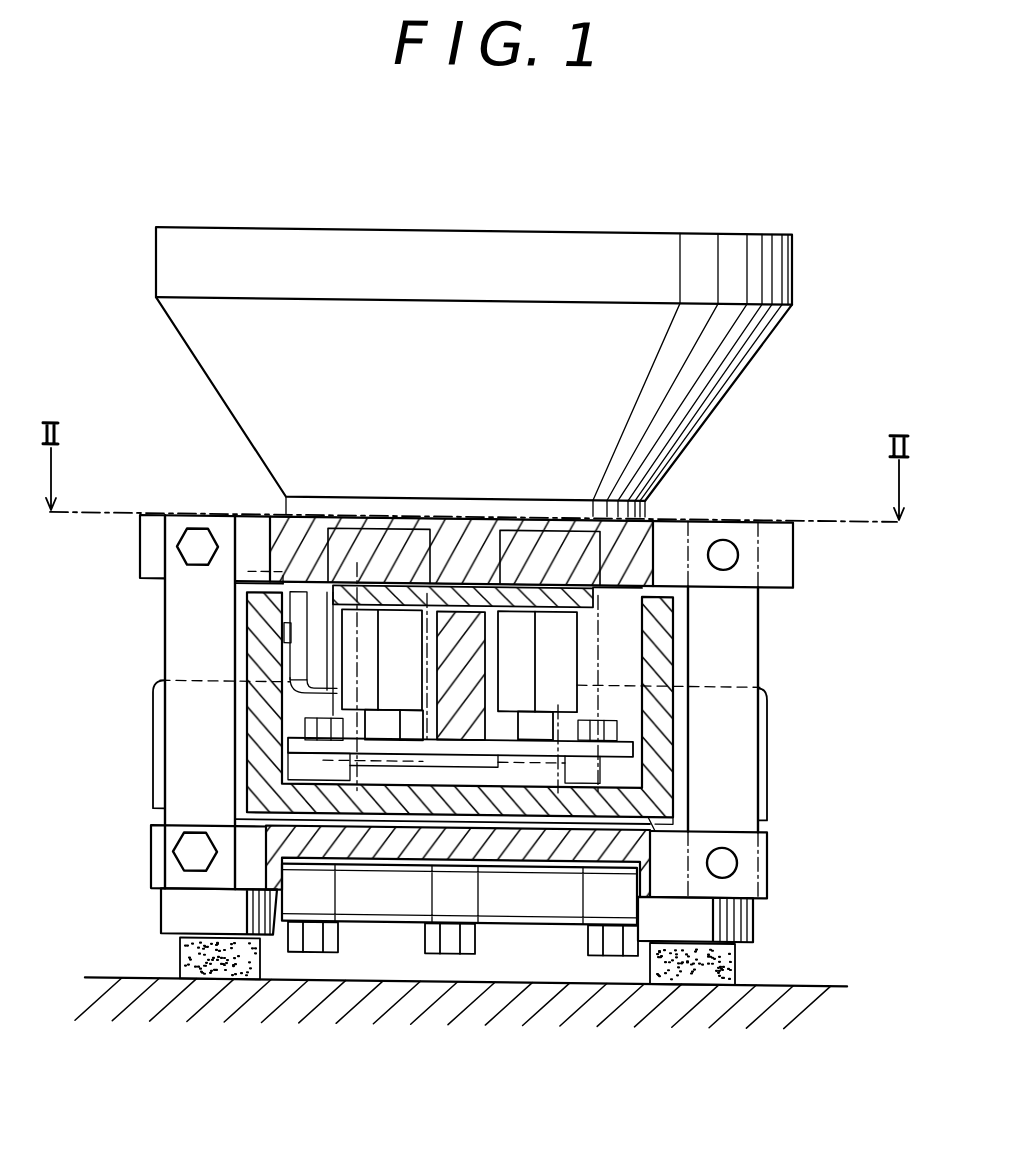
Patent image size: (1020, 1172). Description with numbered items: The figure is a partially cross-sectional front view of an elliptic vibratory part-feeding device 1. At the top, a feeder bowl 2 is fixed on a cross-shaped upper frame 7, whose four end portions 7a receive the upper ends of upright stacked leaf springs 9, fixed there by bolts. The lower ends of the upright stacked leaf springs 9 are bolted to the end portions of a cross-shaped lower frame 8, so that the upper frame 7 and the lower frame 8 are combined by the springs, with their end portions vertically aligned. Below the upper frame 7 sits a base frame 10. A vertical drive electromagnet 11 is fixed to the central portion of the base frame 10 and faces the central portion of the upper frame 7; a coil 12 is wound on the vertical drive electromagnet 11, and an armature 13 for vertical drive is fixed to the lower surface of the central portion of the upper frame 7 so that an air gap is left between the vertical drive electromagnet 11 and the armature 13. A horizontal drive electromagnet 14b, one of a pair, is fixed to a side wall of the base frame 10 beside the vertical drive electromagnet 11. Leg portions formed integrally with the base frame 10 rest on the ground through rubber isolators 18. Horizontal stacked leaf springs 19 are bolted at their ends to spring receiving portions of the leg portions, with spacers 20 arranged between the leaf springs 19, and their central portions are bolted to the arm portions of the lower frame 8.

The elliptic vibratory part-feeding device 1 is at (826, 224).
The feeder bowl 2 is at (176, 265).
The upper frame 7 is at (688, 508).
The end portions of the upper frame 7a is at (778, 545).
The lower frame 8 is at (386, 832).
The upright stacked leaf springs 9 is at (185, 640).
The base frame 10 is at (657, 728).
The vertical drive electromagnet 11 is at (505, 596).
The coil 12 is at (405, 624).
The armature for vertical drive 13 is at (460, 597).
The horizontal drive electromagnet 14b is at (318, 603).
The rubber isolators 18 is at (178, 955).
The horizontal stacked leaf springs 19 is at (562, 870).
The spacers 20 is at (313, 888).